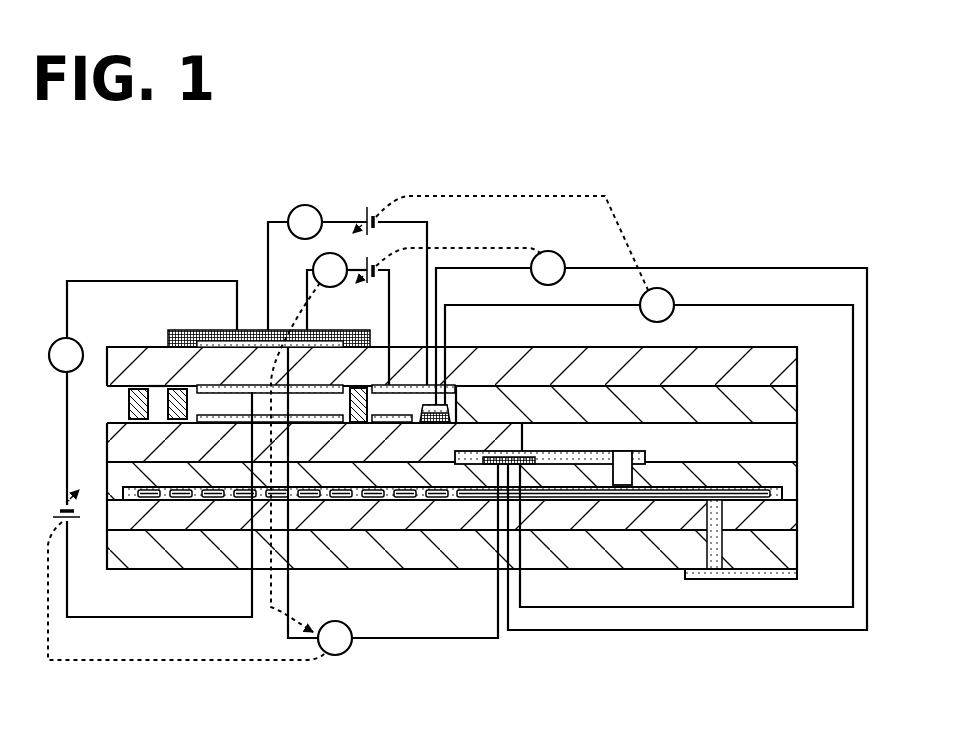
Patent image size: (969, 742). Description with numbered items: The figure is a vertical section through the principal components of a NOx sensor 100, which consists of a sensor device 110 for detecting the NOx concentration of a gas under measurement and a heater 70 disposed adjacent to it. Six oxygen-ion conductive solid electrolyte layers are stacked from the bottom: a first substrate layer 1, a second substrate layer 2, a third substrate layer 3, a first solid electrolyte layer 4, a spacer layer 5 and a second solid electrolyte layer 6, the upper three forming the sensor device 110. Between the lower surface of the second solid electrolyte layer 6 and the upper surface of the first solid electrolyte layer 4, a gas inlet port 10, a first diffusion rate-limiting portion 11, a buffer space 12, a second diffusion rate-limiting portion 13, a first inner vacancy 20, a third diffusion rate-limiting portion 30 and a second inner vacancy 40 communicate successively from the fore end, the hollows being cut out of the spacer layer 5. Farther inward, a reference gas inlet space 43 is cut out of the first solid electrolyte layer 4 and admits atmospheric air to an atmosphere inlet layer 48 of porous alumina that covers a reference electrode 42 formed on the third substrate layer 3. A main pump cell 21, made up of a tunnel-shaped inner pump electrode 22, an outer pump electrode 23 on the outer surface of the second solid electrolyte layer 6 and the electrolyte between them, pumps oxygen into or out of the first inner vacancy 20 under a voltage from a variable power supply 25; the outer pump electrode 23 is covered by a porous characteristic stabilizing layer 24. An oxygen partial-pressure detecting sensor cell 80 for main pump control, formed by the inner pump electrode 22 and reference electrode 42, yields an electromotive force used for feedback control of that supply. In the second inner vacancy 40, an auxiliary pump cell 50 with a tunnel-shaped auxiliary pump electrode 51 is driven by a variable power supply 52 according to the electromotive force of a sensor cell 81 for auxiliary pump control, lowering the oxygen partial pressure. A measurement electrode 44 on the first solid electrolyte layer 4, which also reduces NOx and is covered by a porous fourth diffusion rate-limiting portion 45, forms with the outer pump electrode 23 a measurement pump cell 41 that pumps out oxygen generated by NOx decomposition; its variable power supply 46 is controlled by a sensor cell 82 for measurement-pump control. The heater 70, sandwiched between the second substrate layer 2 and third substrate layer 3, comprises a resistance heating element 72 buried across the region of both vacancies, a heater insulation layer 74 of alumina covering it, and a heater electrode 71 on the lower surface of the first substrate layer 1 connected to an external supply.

The first substrate layer 1 is at (797, 547).
The second substrate layer 2 is at (797, 514).
The third substrate layer 3 is at (797, 468).
The first solid electrolyte layer 4 is at (107, 437).
The spacer layer 5 is at (797, 387).
The second solid electrolyte layer 6 is at (797, 362).
The gas inlet port 10 is at (134, 352).
The first diffusion rate-limiting portion 11 is at (138, 387).
The buffer space 12 is at (160, 390).
The second diffusion rate-limiting portion 13 is at (181, 387).
The first inner vacancy 20 is at (298, 404).
The main pump cell 21 is at (134, 425).
The inner pump electrode 22 is at (250, 385).
The outer pump electrode 23 is at (206, 341).
The characteristic stabilizing layer 24 is at (223, 330).
The variable power supply 25 is at (55, 513).
The third diffusion rate-limiting portion 30 is at (358, 386).
The second inner vacancy 40 is at (377, 400).
The measurement pump cell 41 is at (346, 276).
The reference electrode 42 is at (530, 466).
The reference gas inlet space 43 is at (792, 440).
The measurement electrode 44 is at (415, 421).
The fourth diffusion rate-limiting portion 45 is at (419, 409).
The variable power supply 46 is at (370, 206).
The atmosphere inlet layer 48 is at (540, 454).
The auxiliary pump cell 50 is at (332, 311).
The auxiliary pump electrode 51 is at (425, 384).
The variable power supply 52 is at (371, 284).
The heater 70 is at (480, 543).
The heater electrode 71 is at (797, 574).
The resistance heating element 72 is at (151, 497).
The heater insulation layer 74 is at (128, 500).
The oxygen partial-pressure detecting sensor cell for main pump control 80 is at (373, 640).
The oxygen partial-pressure detecting sensor cell for auxiliary pump control 81 is at (705, 265).
The oxygen partial-pressure detecting sensor cell for measurement-pump control 82 is at (712, 303).
The NOx sensor 100 is at (753, 213).
The sensor device 110 is at (125, 327).